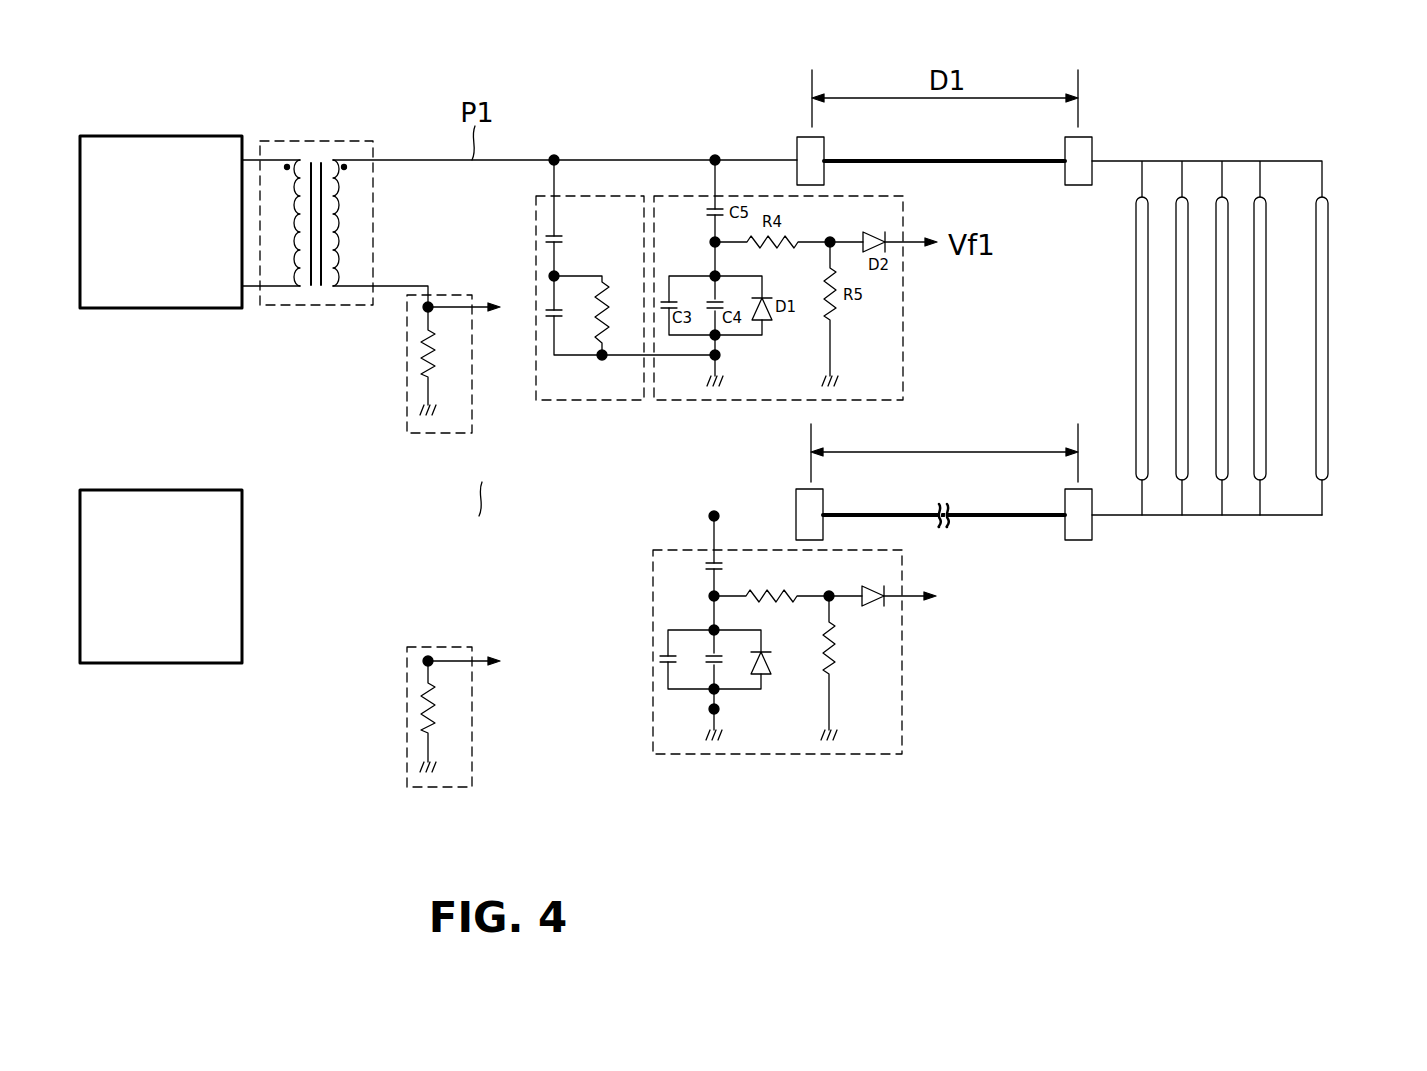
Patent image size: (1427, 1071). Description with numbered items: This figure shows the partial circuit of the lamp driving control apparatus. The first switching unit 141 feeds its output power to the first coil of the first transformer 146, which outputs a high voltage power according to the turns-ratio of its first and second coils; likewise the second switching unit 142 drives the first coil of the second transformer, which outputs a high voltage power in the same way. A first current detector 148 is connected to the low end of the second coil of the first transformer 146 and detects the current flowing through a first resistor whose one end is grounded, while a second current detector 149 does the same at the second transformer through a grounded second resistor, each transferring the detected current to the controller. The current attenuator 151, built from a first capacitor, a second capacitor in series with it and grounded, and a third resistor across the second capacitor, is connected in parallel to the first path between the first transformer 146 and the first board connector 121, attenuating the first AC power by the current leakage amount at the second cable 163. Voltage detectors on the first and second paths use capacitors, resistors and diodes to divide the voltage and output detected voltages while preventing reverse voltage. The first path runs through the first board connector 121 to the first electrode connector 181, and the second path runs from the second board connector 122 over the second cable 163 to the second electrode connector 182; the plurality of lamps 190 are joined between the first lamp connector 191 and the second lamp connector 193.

The first switching unit 141 is at (178, 136).
The second switching unit 142 is at (606, 599).
The first transformer 146 is at (316, 141).
The first current detector 148 is at (407, 358).
The second current detector 149 is at (407, 712).
The current attenuator 151 is at (598, 196).
The first board connector 121 is at (800, 137).
The second board connector 122 is at (800, 489).
The first electrode connector 181 is at (1083, 137).
The second electrode connector 182 is at (1083, 541).
The second cable 163 is at (905, 515).
The lamps 190 is at (1256, 336).
The first lamp connector 191 is at (1232, 160).
The second lamp connector 193 is at (1233, 516).